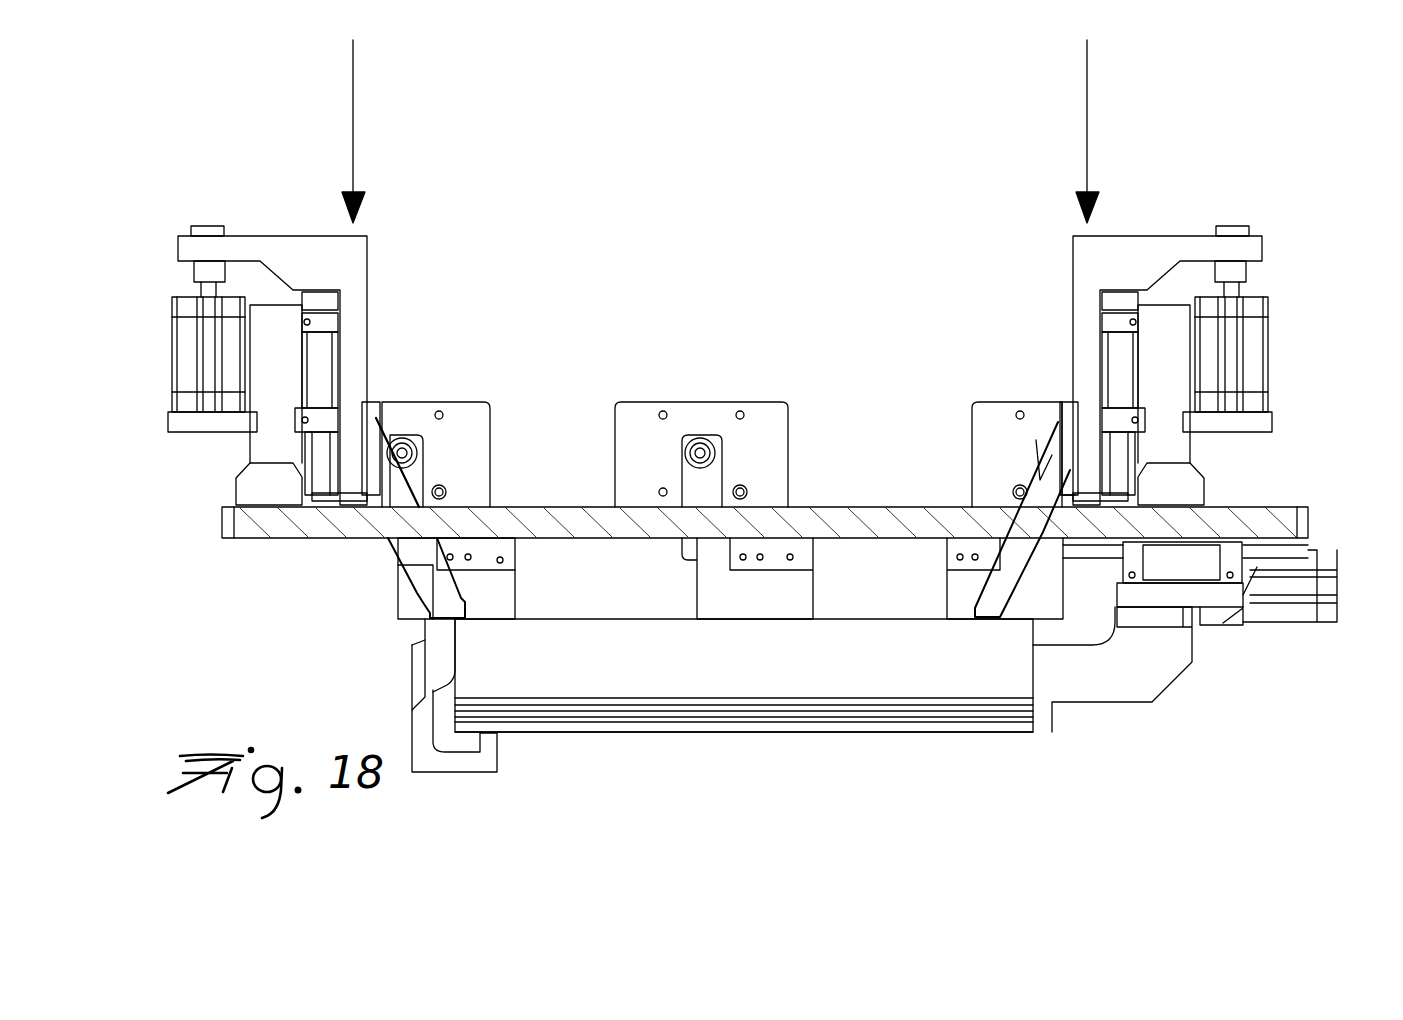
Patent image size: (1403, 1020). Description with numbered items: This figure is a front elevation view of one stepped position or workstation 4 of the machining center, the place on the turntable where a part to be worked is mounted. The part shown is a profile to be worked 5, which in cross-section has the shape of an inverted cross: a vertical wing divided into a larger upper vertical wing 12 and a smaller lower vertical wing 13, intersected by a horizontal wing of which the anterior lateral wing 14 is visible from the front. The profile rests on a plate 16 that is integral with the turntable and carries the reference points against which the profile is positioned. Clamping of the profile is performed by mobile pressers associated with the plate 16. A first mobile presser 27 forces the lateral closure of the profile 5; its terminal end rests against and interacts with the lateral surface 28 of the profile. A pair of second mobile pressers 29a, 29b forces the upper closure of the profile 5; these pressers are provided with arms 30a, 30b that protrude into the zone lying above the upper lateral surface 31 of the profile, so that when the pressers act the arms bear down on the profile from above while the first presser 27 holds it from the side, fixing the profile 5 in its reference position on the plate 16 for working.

The stepped position or placement or workstation 4 is at (724, 272).
The profile to be worked 5 is at (767, 735).
The larger upper vertical wing 12 is at (923, 668).
The smaller lower vertical wing 13 is at (650, 735).
The anterior lateral wing 14 is at (623, 698).
The plate 16 is at (1266, 507).
The first mobile presser 27 is at (1130, 646).
The lateral surface 28 is at (1033, 633).
The second mobile presser 29a is at (270, 205).
The second mobile presser 29b is at (1177, 205).
The arm 30a is at (427, 570).
The arm 30b is at (1017, 568).
The upper lateral surface 31 is at (572, 612).